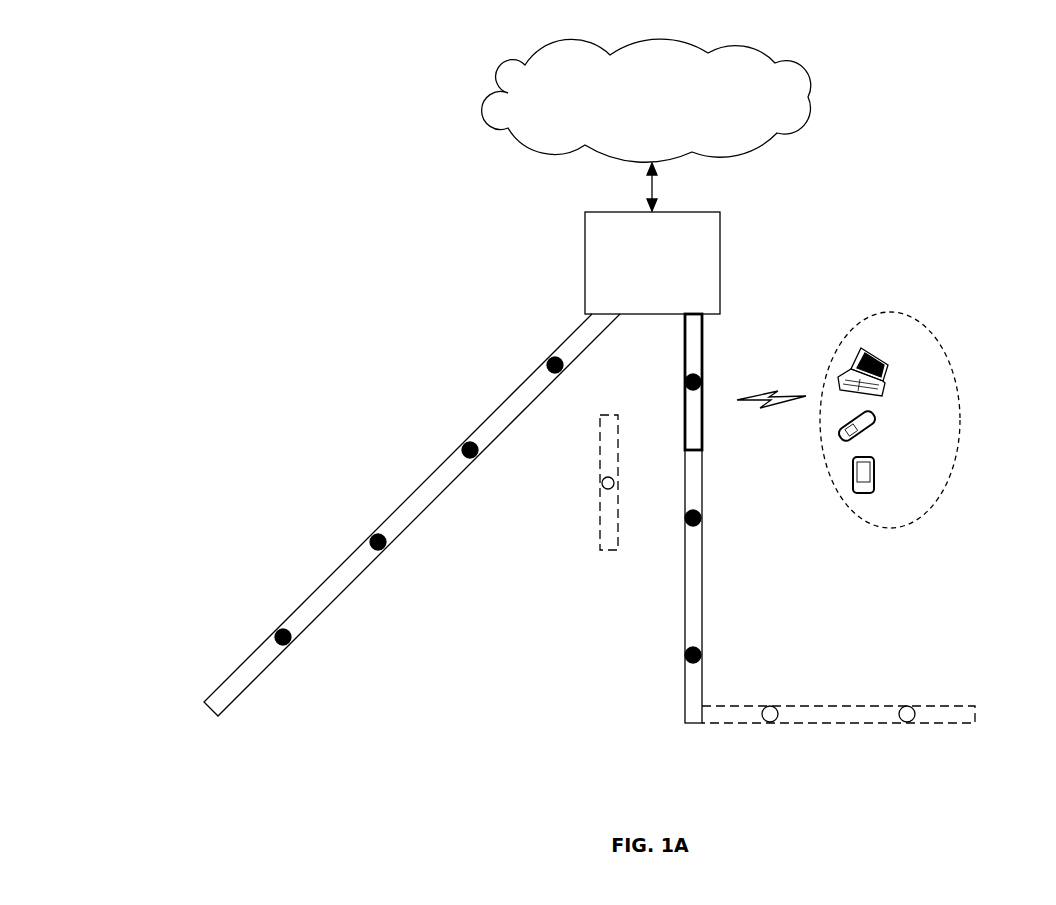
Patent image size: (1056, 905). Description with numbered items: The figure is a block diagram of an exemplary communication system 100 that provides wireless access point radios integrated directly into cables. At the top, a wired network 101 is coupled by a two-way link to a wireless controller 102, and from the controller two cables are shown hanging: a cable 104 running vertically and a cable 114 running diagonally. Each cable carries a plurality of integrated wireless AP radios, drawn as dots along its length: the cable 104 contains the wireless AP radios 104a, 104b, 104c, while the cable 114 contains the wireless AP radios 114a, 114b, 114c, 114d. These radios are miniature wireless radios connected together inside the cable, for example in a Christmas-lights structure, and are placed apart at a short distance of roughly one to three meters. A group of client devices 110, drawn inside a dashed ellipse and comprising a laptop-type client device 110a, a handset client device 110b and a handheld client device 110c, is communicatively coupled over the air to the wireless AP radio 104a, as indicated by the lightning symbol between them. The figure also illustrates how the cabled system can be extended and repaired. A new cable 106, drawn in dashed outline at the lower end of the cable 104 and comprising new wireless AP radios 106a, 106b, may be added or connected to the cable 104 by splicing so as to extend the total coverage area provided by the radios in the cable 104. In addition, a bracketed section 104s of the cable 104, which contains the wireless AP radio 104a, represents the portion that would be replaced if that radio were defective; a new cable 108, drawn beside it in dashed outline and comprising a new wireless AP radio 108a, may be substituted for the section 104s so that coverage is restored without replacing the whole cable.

The communication system 100 is at (191, 102).
The wired network 101 is at (637, 127).
The wireless controller 102 is at (637, 297).
The cable 104 is at (684, 604).
The section of the cable 104s is at (673, 318).
The wireless AP radio 104a is at (702, 381).
The wireless AP radio 104b is at (702, 517).
The wireless AP radio 104c is at (702, 655).
The new cable 106 is at (857, 705).
The new wireless AP radio 106a is at (773, 723).
The new wireless AP radio 106b is at (908, 723).
The new cable 108 is at (598, 537).
The new wireless AP radio 108a is at (602, 483).
The client devices 110 is at (940, 348).
The client device 110a is at (884, 375).
The client device 110b is at (876, 428).
The client device 110c is at (878, 486).
The cable 114 is at (247, 683).
The wireless AP radio 114a is at (549, 360).
The wireless AP radio 114b is at (464, 446).
The wireless AP radio 114c is at (370, 540).
The wireless AP radio 114d is at (275, 634).